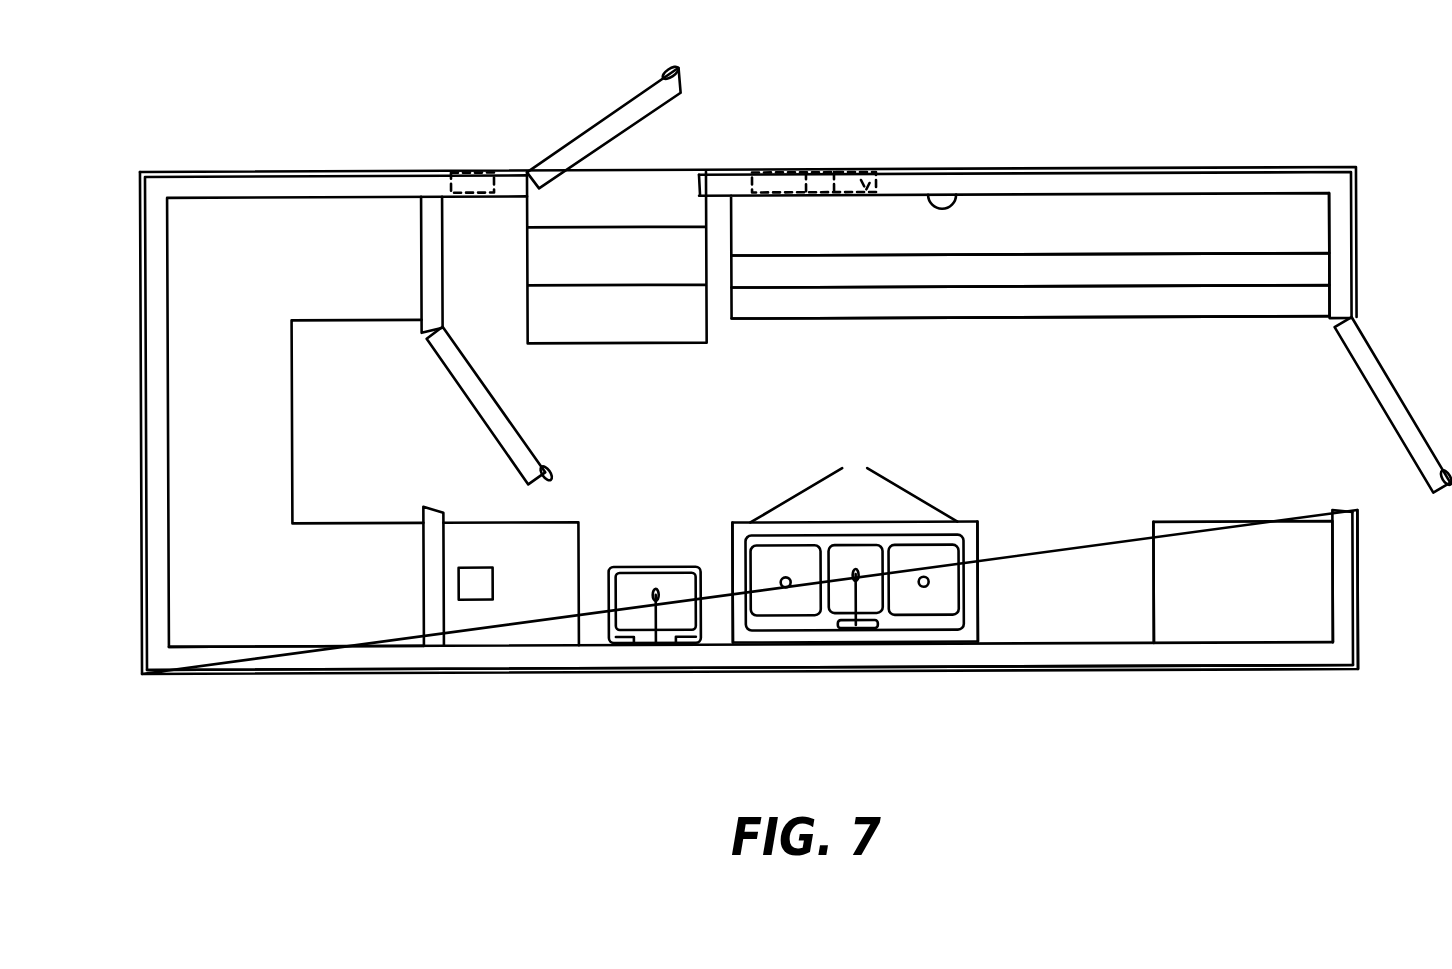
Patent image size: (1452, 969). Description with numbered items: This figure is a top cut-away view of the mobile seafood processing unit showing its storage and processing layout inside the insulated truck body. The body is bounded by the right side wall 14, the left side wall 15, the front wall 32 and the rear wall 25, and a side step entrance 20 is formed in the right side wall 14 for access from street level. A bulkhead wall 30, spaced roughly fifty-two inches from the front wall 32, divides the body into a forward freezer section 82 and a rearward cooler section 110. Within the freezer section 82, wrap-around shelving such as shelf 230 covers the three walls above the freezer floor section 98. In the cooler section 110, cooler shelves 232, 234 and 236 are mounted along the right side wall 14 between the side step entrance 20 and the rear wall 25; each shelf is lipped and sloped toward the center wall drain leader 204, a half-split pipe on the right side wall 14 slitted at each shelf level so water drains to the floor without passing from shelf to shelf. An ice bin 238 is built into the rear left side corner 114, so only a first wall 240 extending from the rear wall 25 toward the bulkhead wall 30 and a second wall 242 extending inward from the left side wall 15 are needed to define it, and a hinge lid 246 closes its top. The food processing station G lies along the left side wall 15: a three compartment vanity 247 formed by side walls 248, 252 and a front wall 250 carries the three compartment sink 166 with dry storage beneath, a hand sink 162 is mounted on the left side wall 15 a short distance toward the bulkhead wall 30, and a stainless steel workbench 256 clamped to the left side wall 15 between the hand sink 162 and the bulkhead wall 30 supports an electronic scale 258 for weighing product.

The right side wall 14 is at (282, 178).
The left side wall 15 is at (222, 662).
The side step entrance 20 is at (625, 180).
The rear wall 25 is at (1343, 227).
The bulkhead wall 30 is at (433, 621).
The front wall 32 is at (155, 322).
The freezer section 82 is at (385, 618).
The freezer floor section 98 is at (350, 459).
The cooler section 110 is at (1085, 390).
The rear left side corner 114 is at (1345, 625).
The hand sink 162 is at (677, 618).
The three compartment sink 166 is at (868, 580).
The drain leader 204 is at (942, 195).
The shelf 230 is at (217, 226).
The cooler shelf 232 is at (918, 298).
The cooler shelf 234 is at (888, 268).
The cooler shelf 236 is at (853, 211).
The ice bin 238 is at (1257, 610).
The first wall 240 is at (1217, 518).
The second wall 242 is at (1150, 563).
The hinge lid 246 is at (1280, 550).
The three compartment vanity 247 is at (968, 633).
The side wall 248 is at (978, 548).
The front wall 250 is at (957, 518).
The side wall 252 is at (728, 550).
The stainless steel workbench 256 is at (520, 616).
The electronic scale 258 is at (468, 586).
The food processing station G is at (630, 498).